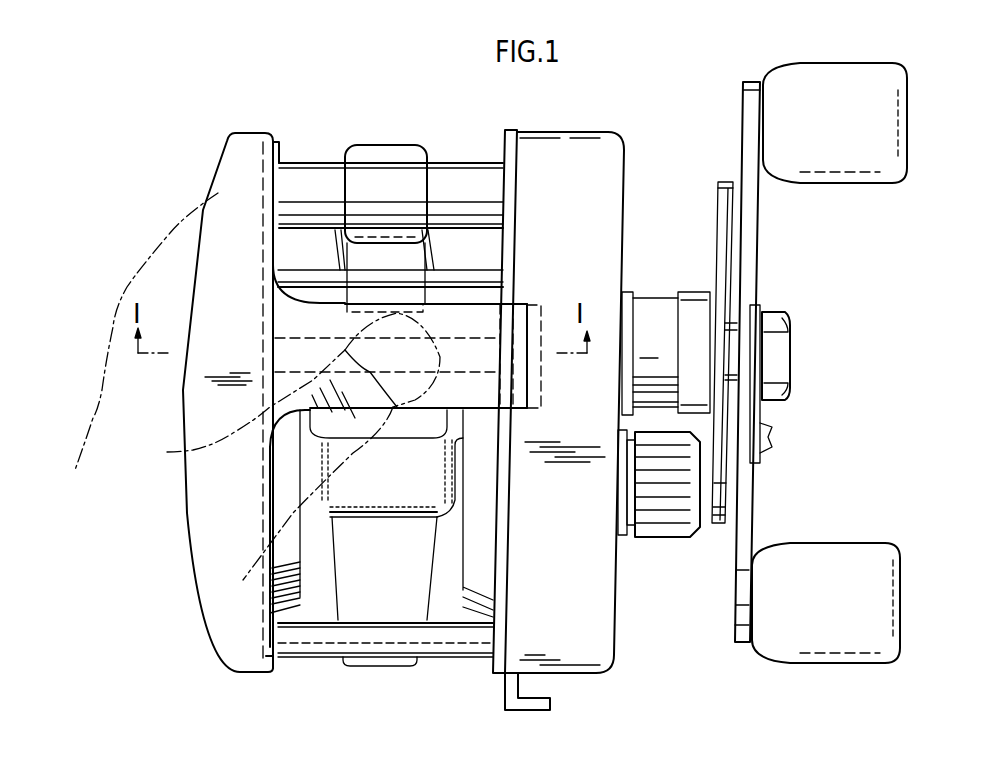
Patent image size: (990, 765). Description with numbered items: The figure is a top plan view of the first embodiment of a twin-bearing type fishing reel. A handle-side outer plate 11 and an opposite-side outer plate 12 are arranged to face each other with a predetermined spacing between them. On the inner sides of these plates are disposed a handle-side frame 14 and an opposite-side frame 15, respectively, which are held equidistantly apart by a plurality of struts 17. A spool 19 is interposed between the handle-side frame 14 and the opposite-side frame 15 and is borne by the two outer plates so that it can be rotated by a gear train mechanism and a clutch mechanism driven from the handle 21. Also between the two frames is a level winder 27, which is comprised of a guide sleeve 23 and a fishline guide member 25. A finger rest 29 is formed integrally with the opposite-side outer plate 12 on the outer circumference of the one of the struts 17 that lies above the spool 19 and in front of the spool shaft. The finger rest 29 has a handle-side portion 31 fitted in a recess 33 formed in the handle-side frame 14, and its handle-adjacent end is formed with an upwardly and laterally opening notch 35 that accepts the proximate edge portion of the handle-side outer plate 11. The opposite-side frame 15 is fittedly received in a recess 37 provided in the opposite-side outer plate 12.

The handle-side outer plate 11 is at (612, 151).
The opposite-side outer plate 12 is at (237, 142).
The handle-side frame 14 is at (503, 150).
The opposite-side frame 15 is at (277, 152).
The struts 17 is at (447, 343).
The spool 19 is at (383, 483).
The handle 21 is at (912, 128).
The guide sleeve 23 is at (317, 173).
The fishline guide member 25 is at (362, 152).
The level winder 27 is at (378, 78).
The finger rest 29 is at (473, 300).
The handle-side portion 31 is at (510, 317).
The recess 33 is at (518, 400).
The notch 35 is at (540, 363).
The recess 37 is at (278, 657).